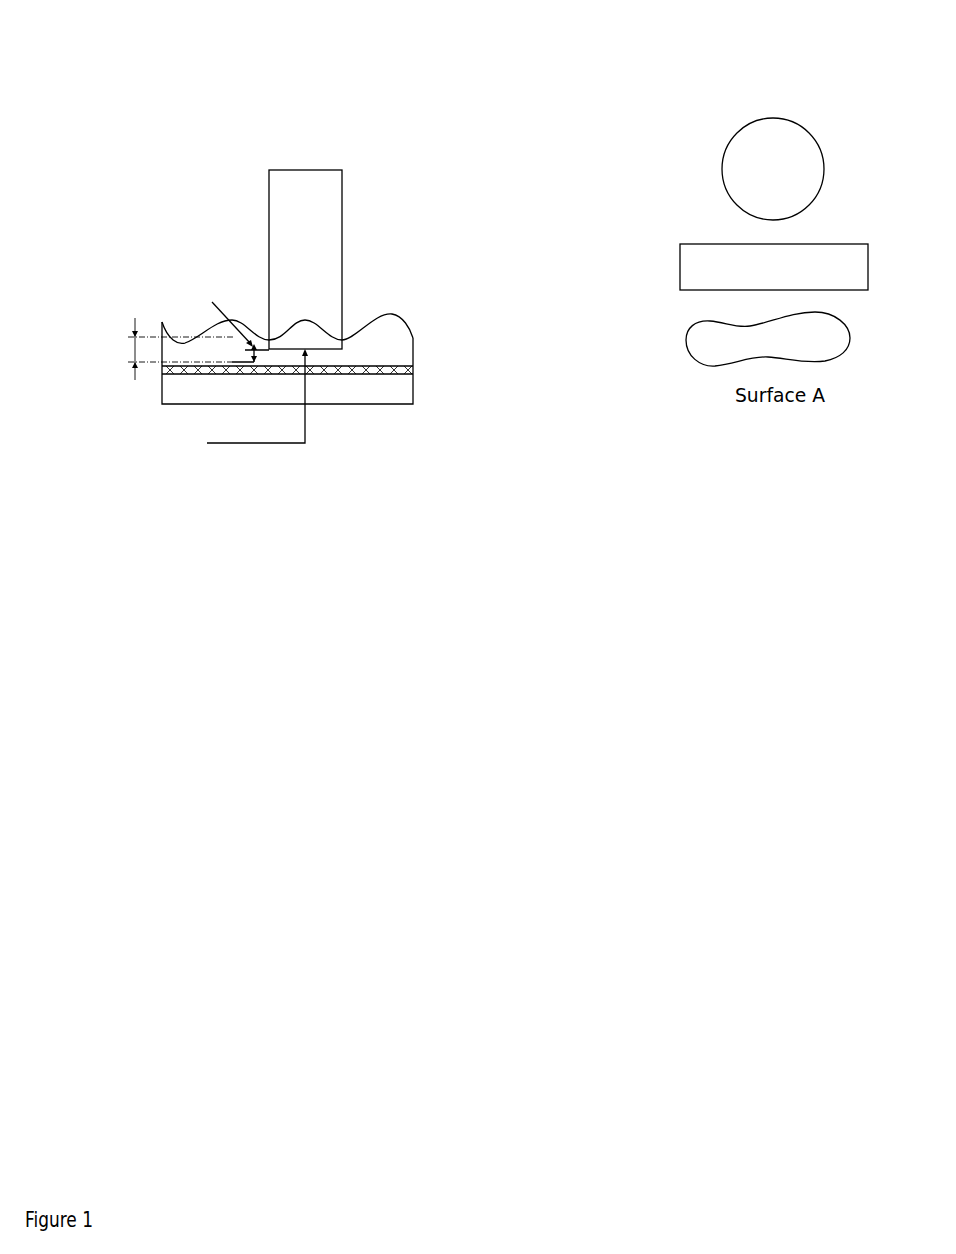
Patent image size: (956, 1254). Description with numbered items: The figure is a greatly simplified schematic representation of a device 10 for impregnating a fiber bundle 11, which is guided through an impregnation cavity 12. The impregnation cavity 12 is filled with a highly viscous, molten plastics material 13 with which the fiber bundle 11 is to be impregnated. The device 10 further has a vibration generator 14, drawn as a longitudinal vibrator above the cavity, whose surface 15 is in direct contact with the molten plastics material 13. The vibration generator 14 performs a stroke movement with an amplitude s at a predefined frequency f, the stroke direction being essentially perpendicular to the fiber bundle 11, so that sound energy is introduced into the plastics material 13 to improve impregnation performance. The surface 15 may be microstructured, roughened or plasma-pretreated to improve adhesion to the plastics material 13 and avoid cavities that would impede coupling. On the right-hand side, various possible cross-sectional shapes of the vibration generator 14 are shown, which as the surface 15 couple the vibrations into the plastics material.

The device 10 is at (124, 95).
The fiber bundle 11 is at (360, 369).
The impregnation cavity 12 is at (172, 412).
The plastics material 13 is at (384, 334).
The vibration generator 14 is at (342, 187).
The surface 15 is at (323, 353).